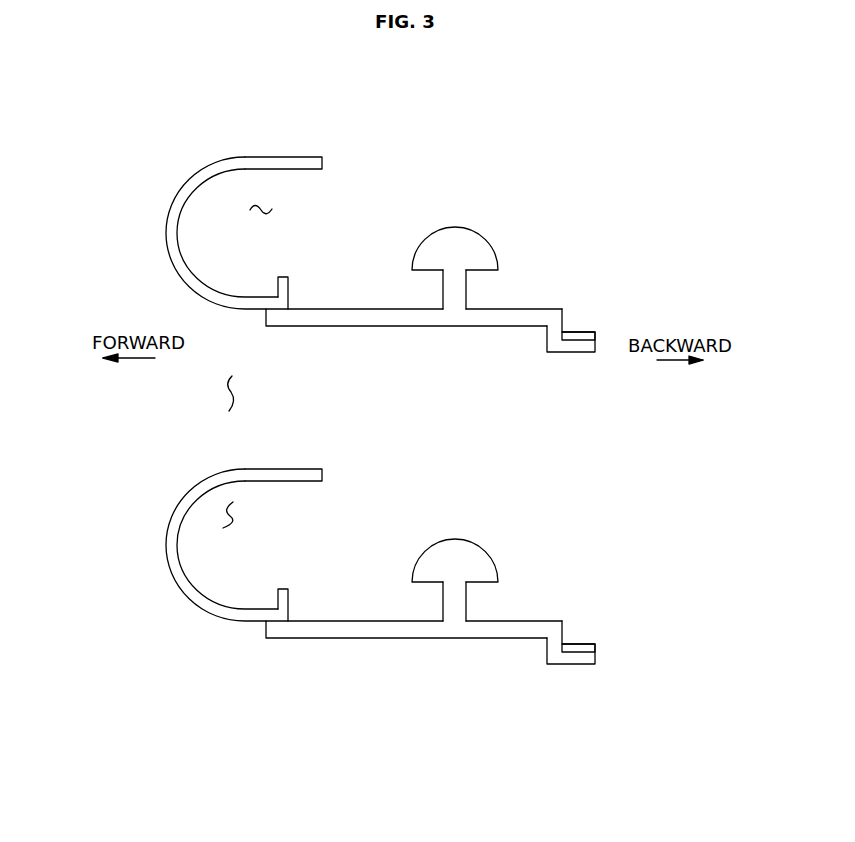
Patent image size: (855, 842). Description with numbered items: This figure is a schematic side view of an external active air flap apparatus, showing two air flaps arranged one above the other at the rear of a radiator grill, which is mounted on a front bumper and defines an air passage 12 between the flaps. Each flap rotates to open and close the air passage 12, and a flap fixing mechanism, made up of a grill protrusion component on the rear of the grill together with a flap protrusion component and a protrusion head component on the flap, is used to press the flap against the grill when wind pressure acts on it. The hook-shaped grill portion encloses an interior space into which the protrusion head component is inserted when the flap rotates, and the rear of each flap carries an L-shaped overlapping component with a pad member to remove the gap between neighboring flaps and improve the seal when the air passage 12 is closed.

The air passage 12 is at (230, 392).